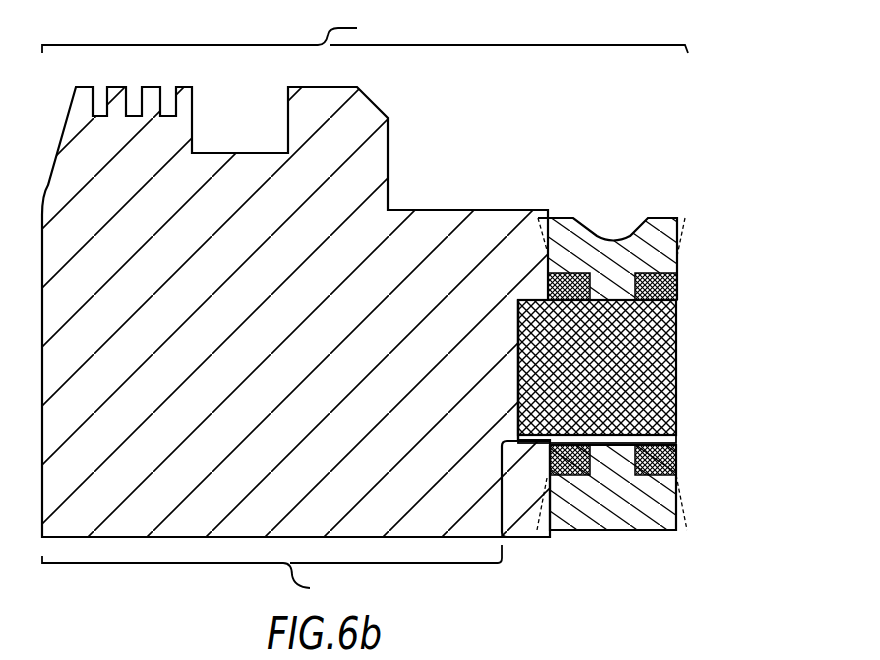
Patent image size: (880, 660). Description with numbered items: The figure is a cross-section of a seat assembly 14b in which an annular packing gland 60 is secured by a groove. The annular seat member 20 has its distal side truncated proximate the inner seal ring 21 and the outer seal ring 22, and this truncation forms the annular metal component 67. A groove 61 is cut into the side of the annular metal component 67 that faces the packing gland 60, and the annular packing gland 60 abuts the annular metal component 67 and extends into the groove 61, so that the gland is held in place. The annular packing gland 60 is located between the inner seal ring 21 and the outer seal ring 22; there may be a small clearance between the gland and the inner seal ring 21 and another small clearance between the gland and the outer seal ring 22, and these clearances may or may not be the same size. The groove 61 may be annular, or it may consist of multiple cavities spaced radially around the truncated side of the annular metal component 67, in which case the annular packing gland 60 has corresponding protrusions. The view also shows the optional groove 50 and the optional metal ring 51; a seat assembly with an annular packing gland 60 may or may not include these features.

The seat assembly 14b is at (365, 33).
The annular metal component 67 is at (266, 365).
The annular seat member 20 is at (272, 575).
The groove 50 is at (616, 238).
The outer seal ring 22 is at (625, 275).
The annular packing gland 60 is at (677, 342).
The groove 61 is at (518, 342).
The metal ring 51 is at (673, 430).
The inner seal ring 21 is at (624, 500).